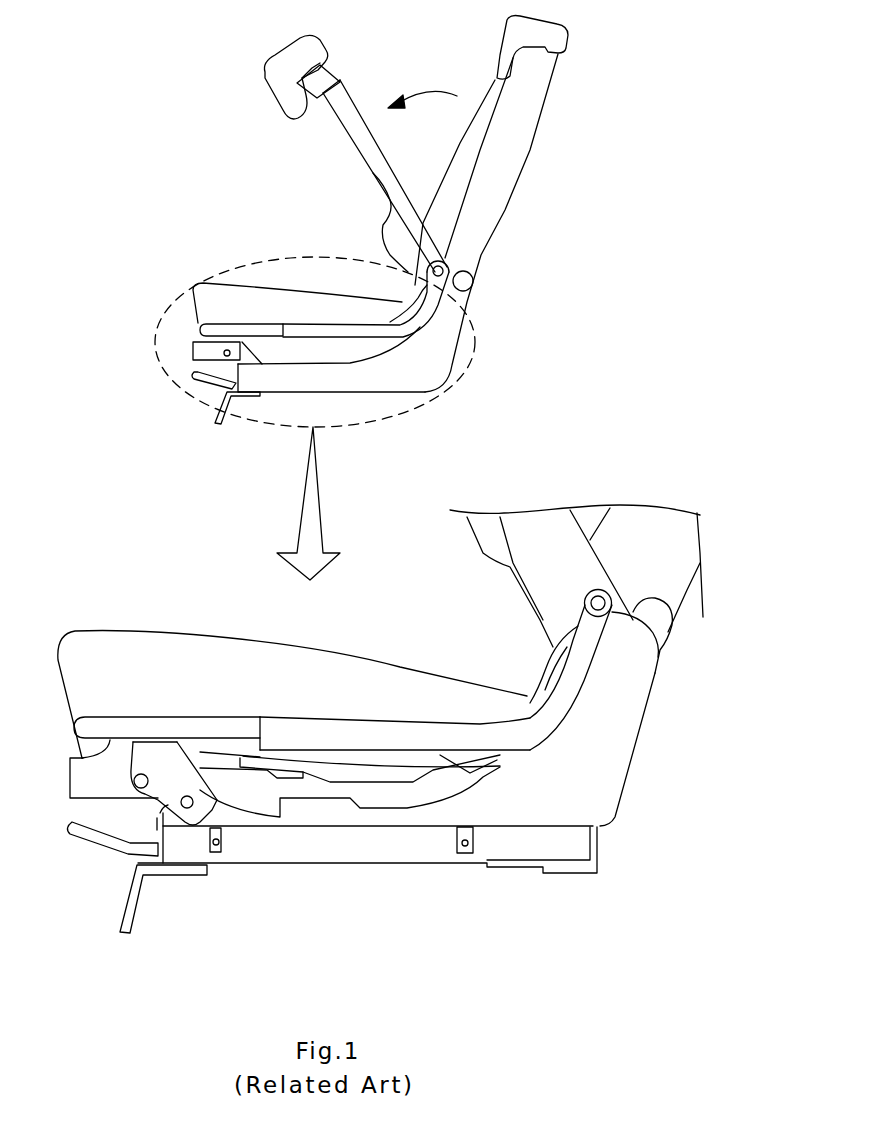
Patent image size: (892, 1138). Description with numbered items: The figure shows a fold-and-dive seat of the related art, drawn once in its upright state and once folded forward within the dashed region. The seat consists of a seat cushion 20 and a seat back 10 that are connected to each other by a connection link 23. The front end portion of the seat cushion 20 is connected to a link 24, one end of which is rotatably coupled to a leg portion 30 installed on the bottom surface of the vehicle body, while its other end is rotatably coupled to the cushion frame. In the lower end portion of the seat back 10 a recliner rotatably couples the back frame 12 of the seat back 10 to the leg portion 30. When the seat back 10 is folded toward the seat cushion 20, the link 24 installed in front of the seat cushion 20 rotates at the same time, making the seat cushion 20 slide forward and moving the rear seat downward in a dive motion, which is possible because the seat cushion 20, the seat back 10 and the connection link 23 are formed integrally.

The seat back 10 is at (493, 200).
The back frame 12 is at (533, 563).
The seat cushion 20 is at (200, 297).
The connection link 23 is at (560, 712).
The link 24 is at (167, 792).
The leg portion 30 is at (353, 847).